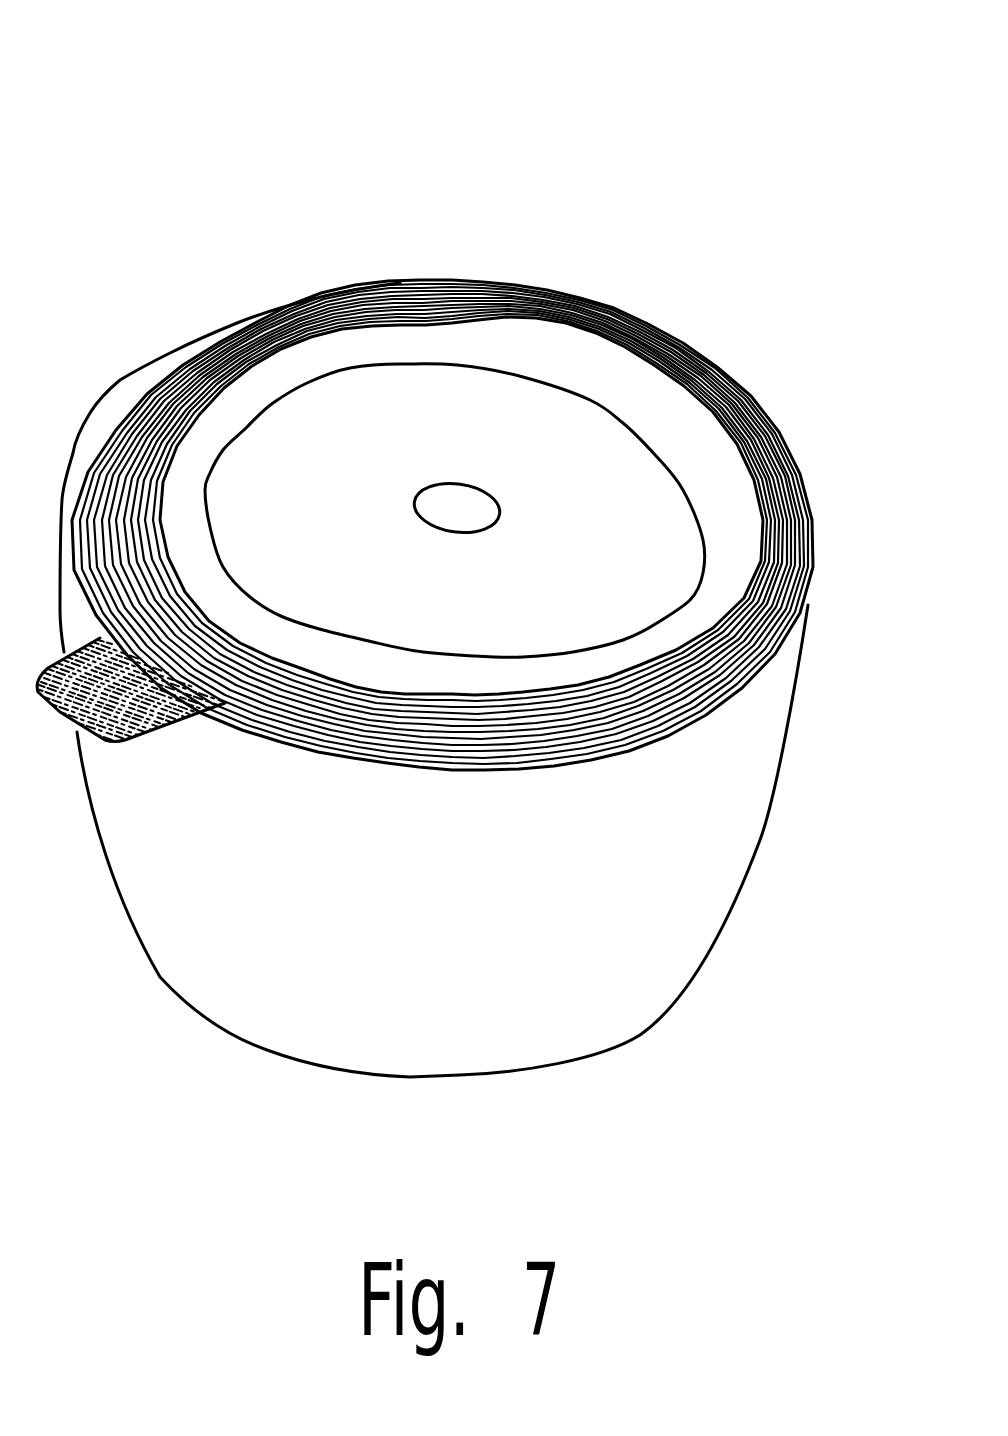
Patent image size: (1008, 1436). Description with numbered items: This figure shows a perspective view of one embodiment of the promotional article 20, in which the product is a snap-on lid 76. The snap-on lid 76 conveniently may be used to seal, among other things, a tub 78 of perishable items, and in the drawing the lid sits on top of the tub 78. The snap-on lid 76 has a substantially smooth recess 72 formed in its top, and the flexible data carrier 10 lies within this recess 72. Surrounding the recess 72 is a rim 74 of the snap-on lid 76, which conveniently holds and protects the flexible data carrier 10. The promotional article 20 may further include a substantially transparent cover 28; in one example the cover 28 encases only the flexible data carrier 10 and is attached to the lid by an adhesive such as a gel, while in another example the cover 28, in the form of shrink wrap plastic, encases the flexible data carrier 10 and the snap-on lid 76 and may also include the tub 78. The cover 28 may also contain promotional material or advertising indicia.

The flexible data carrier 10 is at (529, 420).
The promotional article 20 is at (577, 101).
The substantially transparent cover 28 is at (425, 477).
The recess 72 is at (702, 447).
The rim 74 is at (102, 395).
The snap-on lid 76 is at (607, 315).
The tub 78 is at (757, 850).